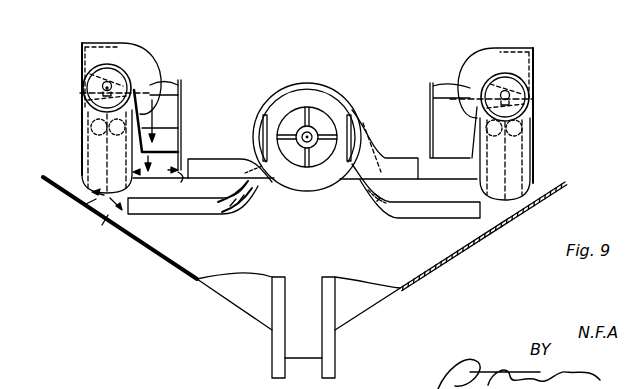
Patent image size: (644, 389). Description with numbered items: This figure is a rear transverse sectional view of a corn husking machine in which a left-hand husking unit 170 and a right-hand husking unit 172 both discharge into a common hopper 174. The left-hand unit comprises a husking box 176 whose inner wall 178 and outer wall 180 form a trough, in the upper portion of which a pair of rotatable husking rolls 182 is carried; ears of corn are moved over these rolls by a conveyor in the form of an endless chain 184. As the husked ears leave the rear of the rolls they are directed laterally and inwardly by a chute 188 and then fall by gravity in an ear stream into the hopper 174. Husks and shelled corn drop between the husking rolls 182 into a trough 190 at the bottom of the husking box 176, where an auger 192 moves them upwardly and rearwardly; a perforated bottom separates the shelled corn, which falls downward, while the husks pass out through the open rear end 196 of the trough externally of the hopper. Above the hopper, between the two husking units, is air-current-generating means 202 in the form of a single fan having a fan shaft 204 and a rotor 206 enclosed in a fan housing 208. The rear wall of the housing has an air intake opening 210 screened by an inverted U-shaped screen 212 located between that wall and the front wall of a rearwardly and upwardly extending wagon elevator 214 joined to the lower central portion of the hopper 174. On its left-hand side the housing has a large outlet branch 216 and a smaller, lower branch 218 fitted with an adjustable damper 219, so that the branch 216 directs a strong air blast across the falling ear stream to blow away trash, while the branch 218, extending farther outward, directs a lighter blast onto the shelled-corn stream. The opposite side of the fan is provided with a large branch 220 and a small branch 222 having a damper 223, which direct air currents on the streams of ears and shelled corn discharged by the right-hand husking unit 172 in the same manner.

The left-hand husking unit 170 is at (108, 38).
The right-hand husking unit 172 is at (520, 46).
The hopper 174 is at (197, 287).
The husking box 176 is at (80, 129).
The inner wall 178 is at (181, 92).
The outer wall 180 is at (80, 84).
The husking rolls 182 is at (90, 148).
The endless chain 184 is at (163, 84).
The chute 188 is at (134, 53).
The trough 190 is at (82, 164).
The auger 192 is at (108, 75).
The open rear end of trough 196 is at (92, 77).
The air-current-generating means 202 is at (326, 89).
The fan shaft 204 is at (309, 133).
The rotor 206 is at (347, 125).
The fan housing 208 is at (303, 86).
The air intake opening 210 is at (283, 120).
The inverted U-shaped screen 212 is at (287, 96).
The wagon elevator 214 is at (335, 366).
The large air outlet branch 216 is at (222, 157).
The small air outlet branch 218 is at (180, 210).
The adjustable damper 219 is at (247, 205).
The large air-directing branch 220 is at (398, 168).
The small air-directing branch 222 is at (453, 219).
The damper 223 is at (378, 203).